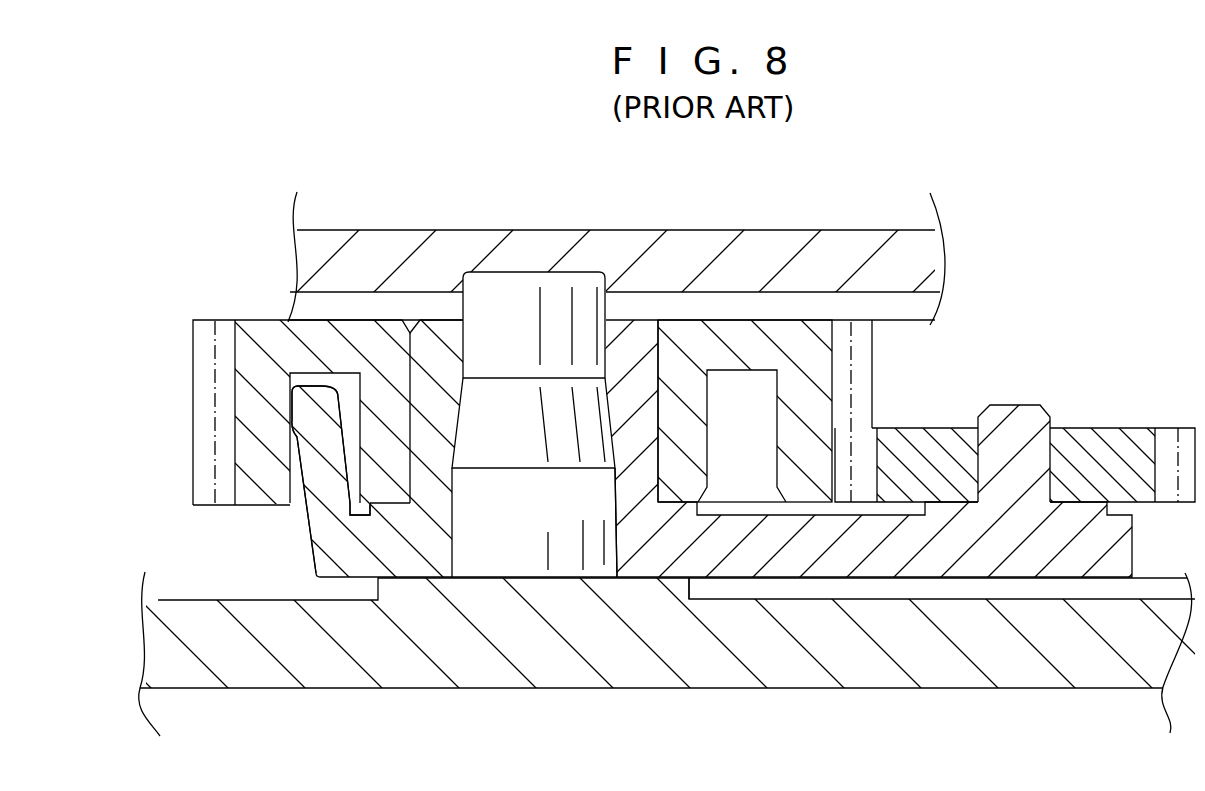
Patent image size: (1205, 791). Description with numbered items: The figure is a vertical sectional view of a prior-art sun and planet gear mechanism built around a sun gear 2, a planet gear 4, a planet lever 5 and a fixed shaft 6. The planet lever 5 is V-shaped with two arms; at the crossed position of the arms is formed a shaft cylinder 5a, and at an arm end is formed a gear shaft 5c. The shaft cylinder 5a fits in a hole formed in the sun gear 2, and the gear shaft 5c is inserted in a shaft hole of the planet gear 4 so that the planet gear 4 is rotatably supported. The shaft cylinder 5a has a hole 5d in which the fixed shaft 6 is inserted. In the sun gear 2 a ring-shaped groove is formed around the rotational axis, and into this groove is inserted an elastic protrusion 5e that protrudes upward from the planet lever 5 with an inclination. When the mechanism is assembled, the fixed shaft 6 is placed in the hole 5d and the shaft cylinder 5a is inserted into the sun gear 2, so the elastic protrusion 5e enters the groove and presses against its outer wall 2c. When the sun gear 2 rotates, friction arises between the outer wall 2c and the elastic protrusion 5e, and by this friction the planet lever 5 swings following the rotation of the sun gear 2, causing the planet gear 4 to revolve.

The sun gear 2 is at (738, 310).
The outer wall of the groove 2c is at (292, 470).
The planet gear 4 is at (1129, 413).
The planet lever 5 is at (831, 469).
The shaft cylinder 5a is at (630, 342).
The gear shaft 5c is at (1027, 413).
The hole 5d is at (615, 498).
The elastic protrusion 5e is at (305, 405).
The fixed shaft 6 is at (527, 343).